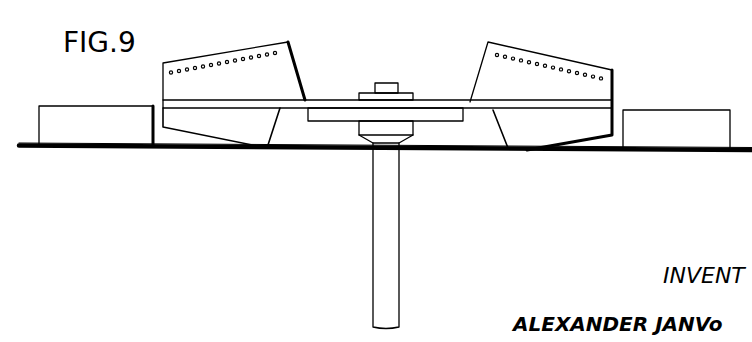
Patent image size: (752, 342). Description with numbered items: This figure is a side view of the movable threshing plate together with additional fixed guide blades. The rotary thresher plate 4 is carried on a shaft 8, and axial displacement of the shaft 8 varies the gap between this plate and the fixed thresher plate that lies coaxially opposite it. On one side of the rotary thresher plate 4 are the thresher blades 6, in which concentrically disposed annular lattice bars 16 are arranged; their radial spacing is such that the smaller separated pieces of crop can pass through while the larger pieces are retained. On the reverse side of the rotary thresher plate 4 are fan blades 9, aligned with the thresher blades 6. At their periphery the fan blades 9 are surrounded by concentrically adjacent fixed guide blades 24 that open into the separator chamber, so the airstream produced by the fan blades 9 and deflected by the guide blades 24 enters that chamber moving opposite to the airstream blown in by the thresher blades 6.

The rotary thresher plate 4 is at (291, 105).
The blades 6 is at (490, 74).
The shaft 8 is at (387, 257).
The fan blades 9 is at (522, 130).
The annular lattice bars 16 is at (556, 67).
The fixed guide blades 24 is at (97, 135).